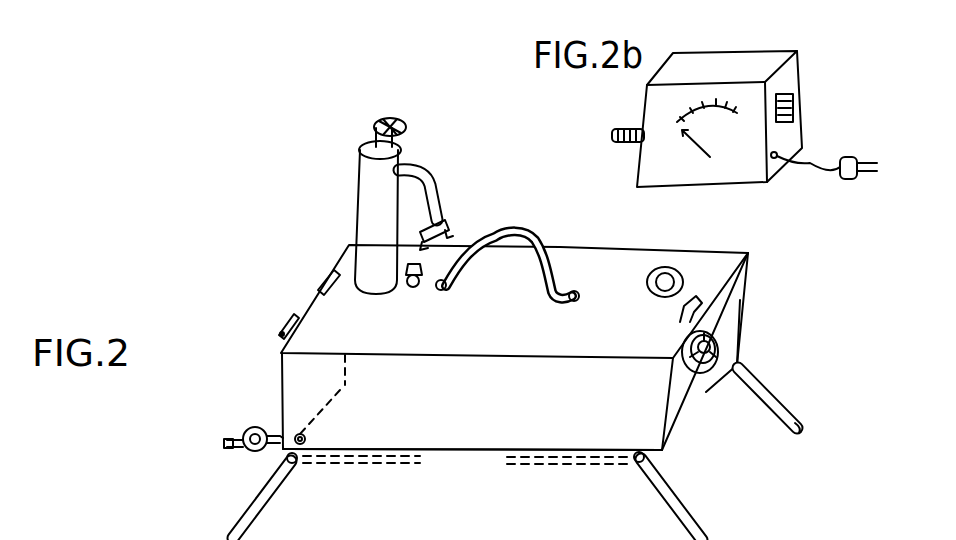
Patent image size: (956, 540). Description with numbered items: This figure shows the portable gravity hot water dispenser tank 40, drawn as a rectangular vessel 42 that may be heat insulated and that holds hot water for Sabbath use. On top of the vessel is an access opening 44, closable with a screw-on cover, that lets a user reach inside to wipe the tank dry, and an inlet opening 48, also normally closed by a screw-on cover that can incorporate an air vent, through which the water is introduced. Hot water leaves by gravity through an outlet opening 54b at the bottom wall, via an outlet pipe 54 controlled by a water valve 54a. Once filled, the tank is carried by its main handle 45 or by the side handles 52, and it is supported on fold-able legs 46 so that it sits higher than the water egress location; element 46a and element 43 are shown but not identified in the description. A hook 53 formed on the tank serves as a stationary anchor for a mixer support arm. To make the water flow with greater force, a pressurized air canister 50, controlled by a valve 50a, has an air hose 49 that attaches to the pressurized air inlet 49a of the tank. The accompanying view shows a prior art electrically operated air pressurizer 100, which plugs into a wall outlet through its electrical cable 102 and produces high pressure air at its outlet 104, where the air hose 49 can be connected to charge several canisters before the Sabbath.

In FIG. 2, the dispenser tank 40 is at (283, 300).
In FIG. 2, the rectangular vessel 42 is at (730, 307).
In FIG. 2, the base 43 is at (500, 422).
In FIG. 2, the access opening 44 is at (713, 343).
In FIG. 2, the main handle 45 is at (540, 235).
In FIG. 2, the fold-able legs 46 is at (240, 517).
In FIG. 2, the leg cap 46a is at (295, 468).
In FIG. 2, the inlet opening 48 is at (673, 272).
In FIG. 2, the air hose 49 is at (418, 168).
In FIG. 2, the pressurized air inlet 49a is at (420, 271).
In FIG. 2, the pressurized air canister 50 is at (368, 185).
In FIG. 2, the valve 50a is at (390, 113).
In FIG. 2, the side handles 52 is at (327, 280).
In FIG. 2, the hook 53 is at (270, 333).
In FIG. 2, the outlet pipe 54 is at (247, 432).
In FIG. 2, the water valve 54a is at (260, 430).
In FIG. 2, the outlet opening 54b is at (305, 437).
In FIG. 2B, the air pressurizer 100 is at (747, 70).
In FIG. 2B, the electrical cable 102 is at (821, 163).
In FIG. 2B, the outlet 104 is at (627, 128).